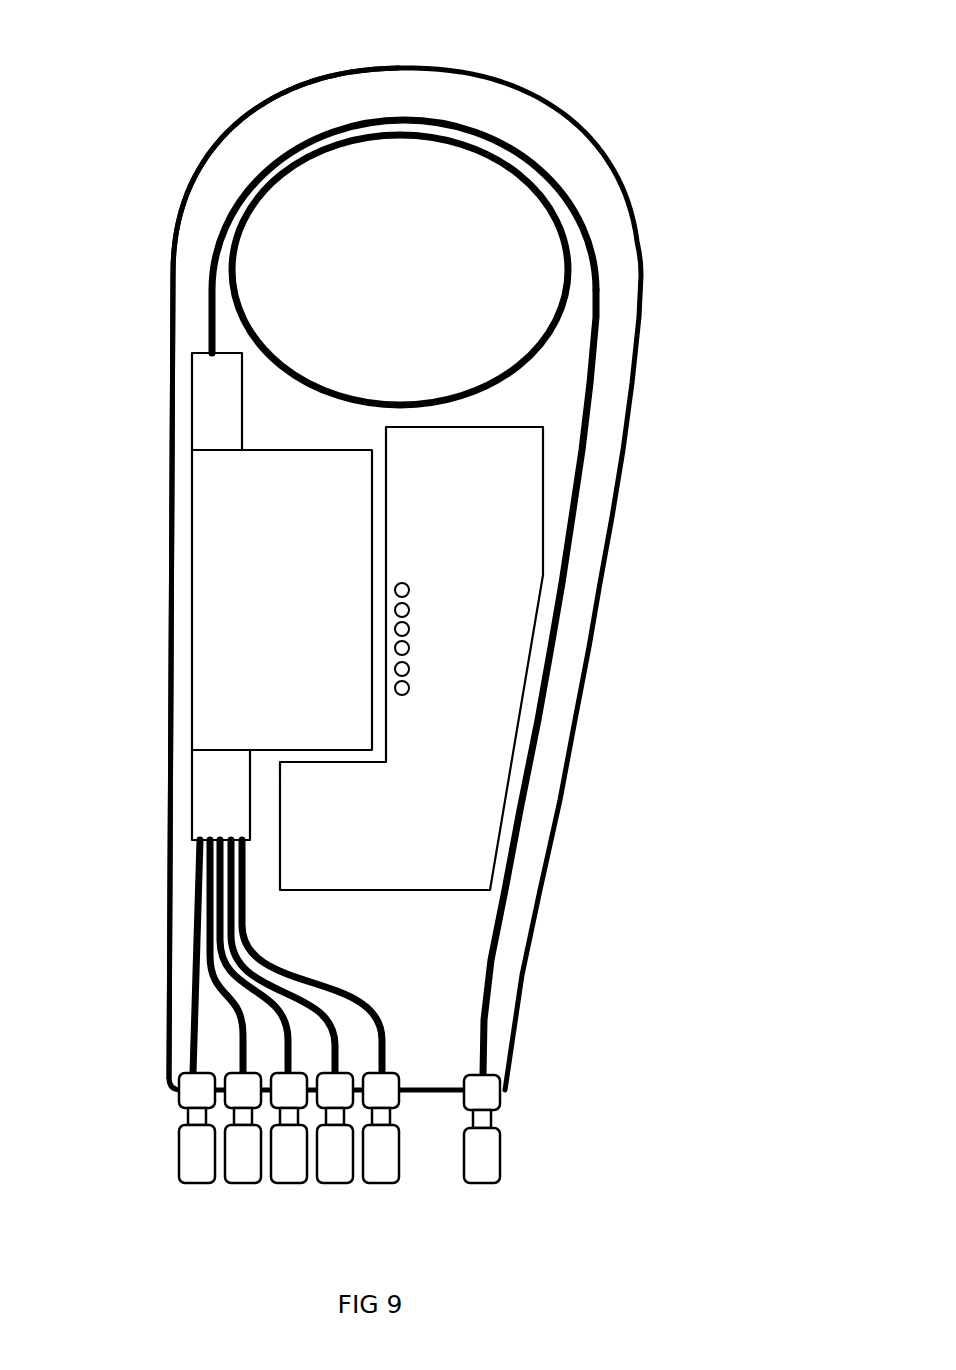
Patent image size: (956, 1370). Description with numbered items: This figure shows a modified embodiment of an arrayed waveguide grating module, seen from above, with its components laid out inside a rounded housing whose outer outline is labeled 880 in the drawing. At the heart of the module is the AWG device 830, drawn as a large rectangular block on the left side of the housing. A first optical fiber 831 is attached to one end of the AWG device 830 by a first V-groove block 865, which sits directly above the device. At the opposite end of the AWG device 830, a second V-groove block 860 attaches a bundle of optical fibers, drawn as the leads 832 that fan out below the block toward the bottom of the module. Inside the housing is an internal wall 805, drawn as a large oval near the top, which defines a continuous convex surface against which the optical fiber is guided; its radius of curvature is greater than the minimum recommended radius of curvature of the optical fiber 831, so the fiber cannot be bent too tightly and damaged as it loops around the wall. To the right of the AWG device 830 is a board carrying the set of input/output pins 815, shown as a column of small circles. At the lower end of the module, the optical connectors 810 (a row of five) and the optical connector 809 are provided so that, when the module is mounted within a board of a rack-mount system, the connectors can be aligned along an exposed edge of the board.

The housing 880 is at (443, 67).
The first optical fiber 831 is at (210, 188).
The internal wall 805 is at (563, 270).
The first V-groove block 865 is at (211, 407).
The AWG device 830 is at (231, 647).
The second V-groove block 860 is at (211, 807).
The set of input/output pins 815 is at (408, 670).
The lead wires 832 is at (205, 906).
The optical connectors 810 is at (197, 1200).
The optical connector 809 is at (491, 1143).